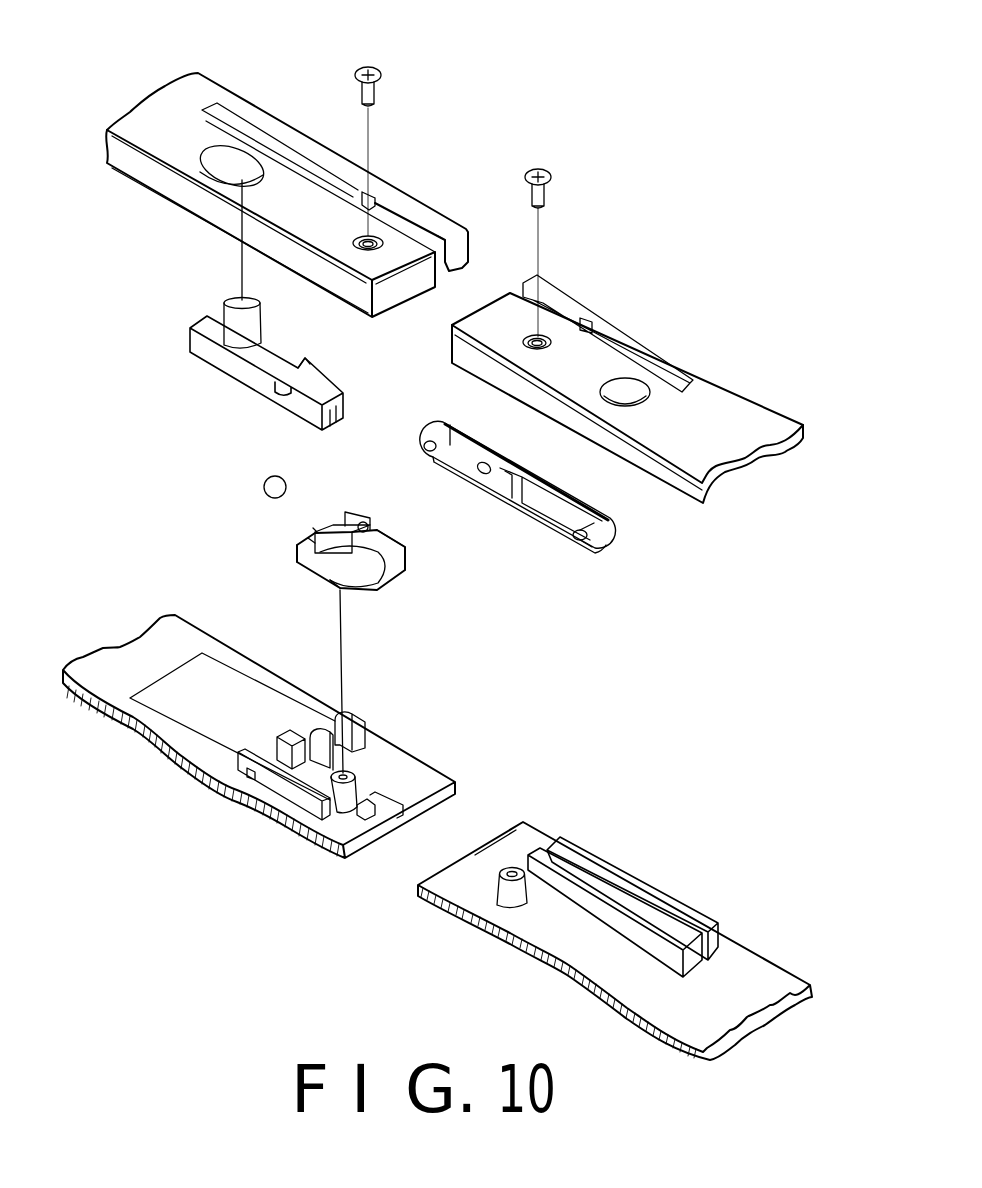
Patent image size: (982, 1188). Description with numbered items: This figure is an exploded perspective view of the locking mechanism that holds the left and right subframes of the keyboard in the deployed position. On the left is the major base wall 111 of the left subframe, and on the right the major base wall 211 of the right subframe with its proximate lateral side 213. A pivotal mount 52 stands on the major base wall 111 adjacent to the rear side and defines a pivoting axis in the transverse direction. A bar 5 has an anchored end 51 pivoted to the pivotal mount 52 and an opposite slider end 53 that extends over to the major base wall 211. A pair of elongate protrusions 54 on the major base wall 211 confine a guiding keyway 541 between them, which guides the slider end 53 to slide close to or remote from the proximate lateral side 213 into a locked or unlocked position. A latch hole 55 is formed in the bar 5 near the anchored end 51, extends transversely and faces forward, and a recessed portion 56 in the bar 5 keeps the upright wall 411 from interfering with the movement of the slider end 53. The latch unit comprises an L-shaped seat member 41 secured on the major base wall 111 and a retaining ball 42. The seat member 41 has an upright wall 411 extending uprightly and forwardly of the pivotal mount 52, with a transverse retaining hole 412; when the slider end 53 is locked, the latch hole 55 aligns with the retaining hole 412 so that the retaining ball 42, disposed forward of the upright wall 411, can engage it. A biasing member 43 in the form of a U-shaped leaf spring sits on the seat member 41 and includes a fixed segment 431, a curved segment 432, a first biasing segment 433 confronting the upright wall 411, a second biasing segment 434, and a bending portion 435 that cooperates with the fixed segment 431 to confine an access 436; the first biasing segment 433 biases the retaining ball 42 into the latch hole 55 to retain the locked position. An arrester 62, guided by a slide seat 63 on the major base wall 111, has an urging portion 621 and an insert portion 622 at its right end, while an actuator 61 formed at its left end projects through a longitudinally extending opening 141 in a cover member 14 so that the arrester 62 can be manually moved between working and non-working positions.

The cover member 14 is at (160, 107).
The opening 141 is at (230, 165).
The actuator 61 is at (240, 328).
The arrester 62 is at (237, 367).
The urging portion 621 is at (335, 395).
The insert portion 622 is at (340, 422).
The bar 5 is at (613, 508).
The anchored end 51 is at (423, 448).
The latch hole 55 is at (462, 452).
The recessed portion 56 is at (510, 493).
The slider end 53 is at (600, 530).
The retaining ball 42 is at (270, 478).
The biasing member 43 is at (383, 588).
The seat member 41 is at (408, 575).
The upright wall 411 is at (390, 562).
The retaining hole 412 is at (365, 510).
The first biasing segment 433 is at (387, 532).
The second biasing segment 434 is at (335, 540).
The bending portion 435 is at (315, 528).
The access 436 is at (308, 538).
The fixed segment 431 is at (313, 563).
The curved segment 432 is at (342, 588).
The major base wall 111 is at (112, 658).
The pivotal mount 52 is at (372, 772).
The slide seat 63 is at (268, 780).
The major base wall 211 is at (753, 982).
The proximate lateral side 213 is at (440, 868).
The elongate protrusions 54 is at (683, 910).
The guiding keyway 541 is at (622, 892).